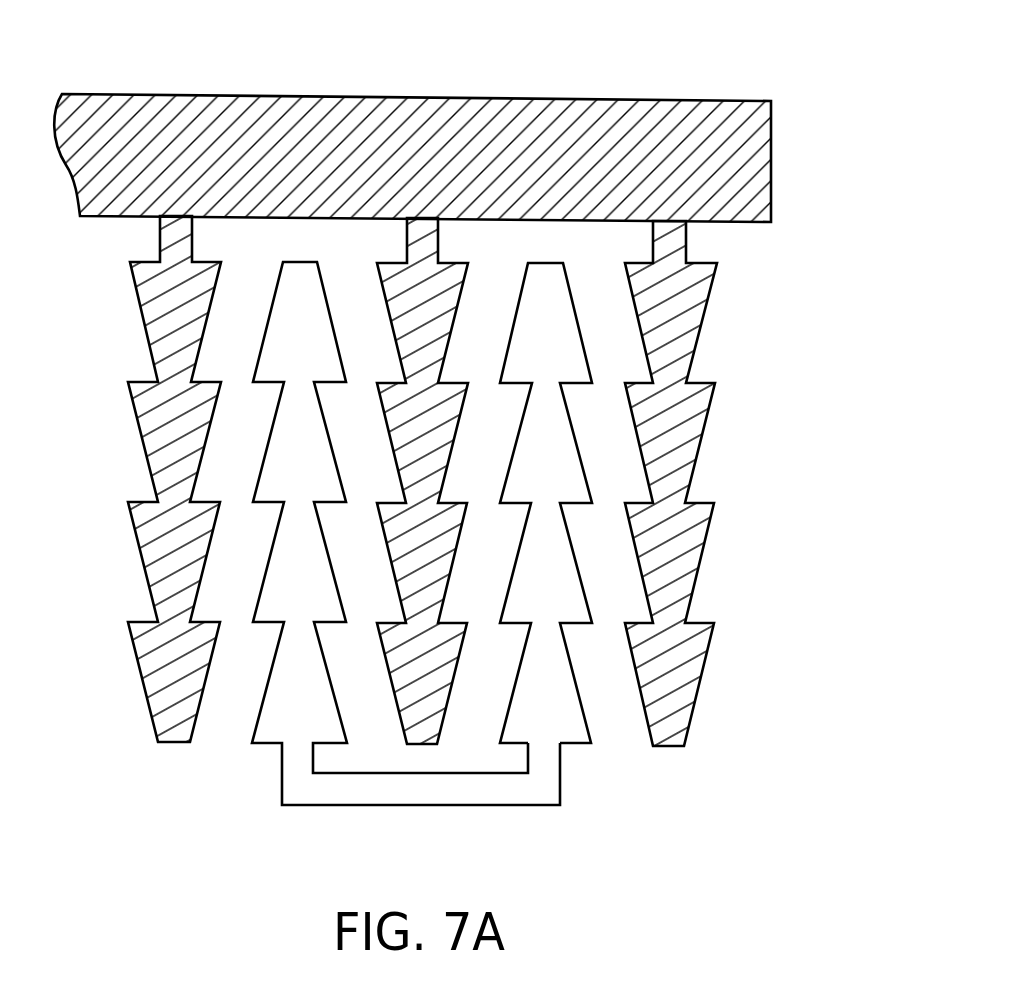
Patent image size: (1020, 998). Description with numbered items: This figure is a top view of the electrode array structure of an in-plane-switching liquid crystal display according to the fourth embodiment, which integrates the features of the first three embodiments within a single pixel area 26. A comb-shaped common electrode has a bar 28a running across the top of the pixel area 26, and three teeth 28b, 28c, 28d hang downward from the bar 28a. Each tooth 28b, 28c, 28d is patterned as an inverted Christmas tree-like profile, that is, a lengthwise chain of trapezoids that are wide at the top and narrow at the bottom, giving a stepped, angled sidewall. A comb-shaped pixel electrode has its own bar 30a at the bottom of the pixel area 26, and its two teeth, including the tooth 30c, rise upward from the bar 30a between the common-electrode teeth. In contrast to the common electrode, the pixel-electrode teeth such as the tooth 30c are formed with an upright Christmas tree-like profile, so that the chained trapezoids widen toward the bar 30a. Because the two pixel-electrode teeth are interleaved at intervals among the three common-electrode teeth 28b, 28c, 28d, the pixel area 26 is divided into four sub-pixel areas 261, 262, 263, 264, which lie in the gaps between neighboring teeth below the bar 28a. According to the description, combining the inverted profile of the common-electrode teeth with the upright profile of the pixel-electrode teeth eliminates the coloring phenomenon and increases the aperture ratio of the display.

The pixel area 26 is at (812, 248).
The bar 28a is at (728, 101).
The tooth 28b is at (183, 495).
The tooth 28c is at (435, 483).
The tooth 28d is at (677, 492).
The bar 30a is at (315, 596).
The tooth 30c is at (558, 597).
The sub-pixel area 261 is at (242, 237).
The sub-pixel area 262 is at (380, 237).
The sub-pixel area 263 is at (473, 237).
The sub-pixel area 264 is at (618, 237).